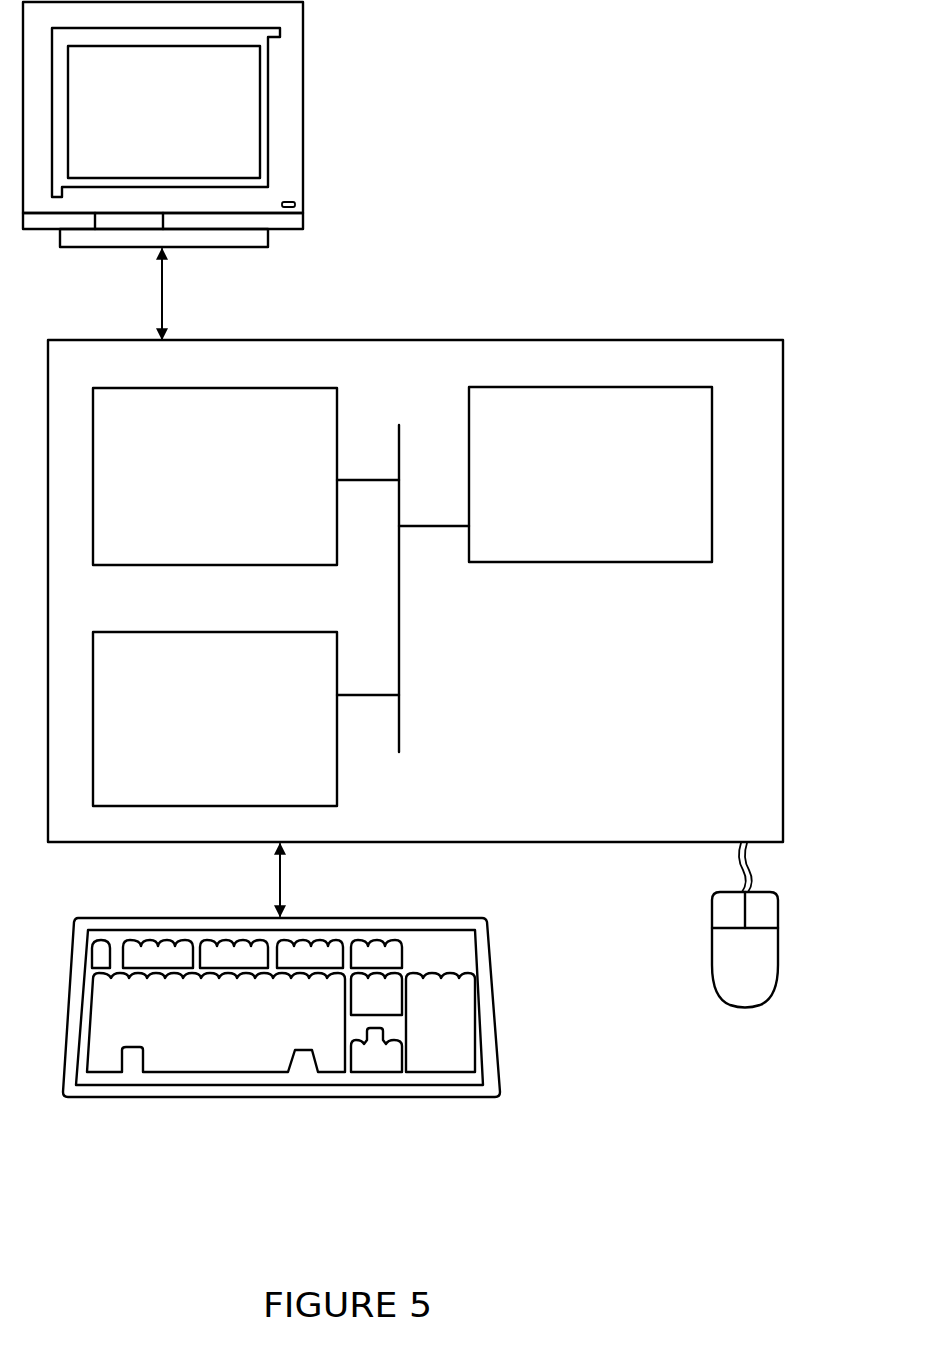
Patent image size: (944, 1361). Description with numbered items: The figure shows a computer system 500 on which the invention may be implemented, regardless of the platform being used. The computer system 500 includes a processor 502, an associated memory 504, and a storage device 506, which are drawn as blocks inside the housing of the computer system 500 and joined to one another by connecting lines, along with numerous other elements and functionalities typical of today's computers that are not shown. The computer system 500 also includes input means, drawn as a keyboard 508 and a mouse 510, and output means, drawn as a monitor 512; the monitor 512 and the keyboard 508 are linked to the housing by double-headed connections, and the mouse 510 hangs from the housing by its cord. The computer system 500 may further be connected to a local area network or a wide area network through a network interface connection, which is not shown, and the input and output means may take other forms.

The computer system 500 is at (540, 186).
The processor 502 is at (599, 488).
The memory 504 is at (237, 488).
The storage device 506 is at (234, 732).
The keyboard 508 is at (235, 1035).
The mouse 510 is at (767, 973).
The monitor 512 is at (183, 130).